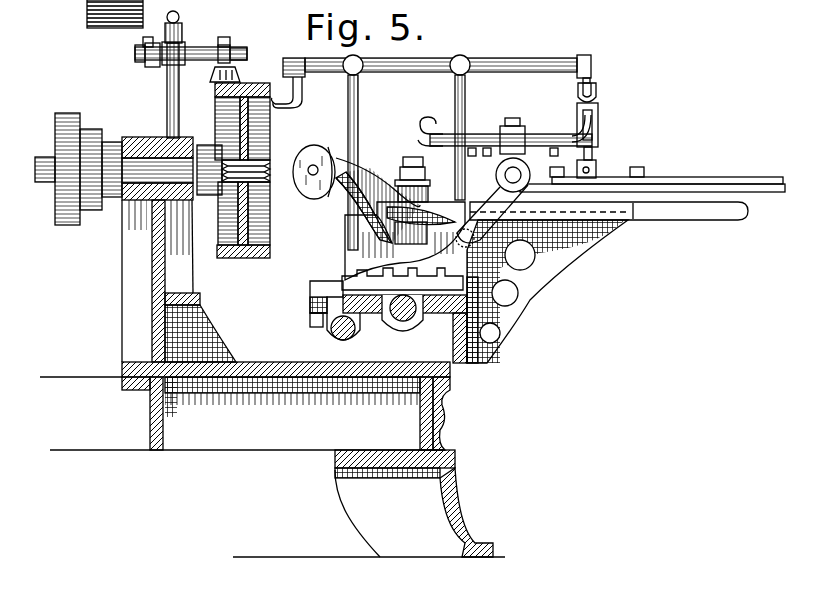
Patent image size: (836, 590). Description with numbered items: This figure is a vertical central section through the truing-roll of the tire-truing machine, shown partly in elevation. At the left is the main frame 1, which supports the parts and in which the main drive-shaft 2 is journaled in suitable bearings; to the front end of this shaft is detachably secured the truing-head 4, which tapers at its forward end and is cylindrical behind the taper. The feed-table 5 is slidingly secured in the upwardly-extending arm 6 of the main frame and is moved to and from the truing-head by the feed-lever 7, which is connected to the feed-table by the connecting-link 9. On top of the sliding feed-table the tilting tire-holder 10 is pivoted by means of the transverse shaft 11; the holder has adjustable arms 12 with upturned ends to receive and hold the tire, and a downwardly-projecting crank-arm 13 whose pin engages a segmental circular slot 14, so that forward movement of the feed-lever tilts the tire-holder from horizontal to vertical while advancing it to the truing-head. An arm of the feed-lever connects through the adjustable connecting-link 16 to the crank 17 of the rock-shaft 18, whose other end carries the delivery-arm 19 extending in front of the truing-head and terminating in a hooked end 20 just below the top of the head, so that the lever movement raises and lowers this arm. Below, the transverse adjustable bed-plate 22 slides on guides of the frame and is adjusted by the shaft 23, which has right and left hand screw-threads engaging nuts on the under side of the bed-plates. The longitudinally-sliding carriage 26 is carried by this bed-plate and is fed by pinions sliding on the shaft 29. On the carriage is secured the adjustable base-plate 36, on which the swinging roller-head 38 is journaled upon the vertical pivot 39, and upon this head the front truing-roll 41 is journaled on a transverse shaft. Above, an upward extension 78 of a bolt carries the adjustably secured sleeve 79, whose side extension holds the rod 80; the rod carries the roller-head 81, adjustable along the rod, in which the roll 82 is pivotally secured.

The main frame 1 is at (130, 250).
The main drive-shaft 2 is at (48, 185).
The truing-head 4 is at (218, 100).
The feed-table 5 is at (698, 212).
The upwardly-extending arm 6 is at (560, 248).
The feed-lever 7 is at (697, 183).
The connecting-link 9 is at (610, 176).
The tilting tire-holder 10 is at (484, 131).
The transverse shaft 11 is at (516, 177).
The adjustable arms 12 is at (598, 129).
The crank-arm 13 is at (508, 245).
The segmental circular slot 14 is at (493, 285).
The adjustable connecting-link 16 is at (600, 104).
The crank 17 is at (592, 76).
The rock-shaft 18 is at (499, 66).
The delivery-arm 19 is at (300, 86).
The hooked end 20 is at (280, 109).
The transverse adjustable bed-plate 22 is at (320, 290).
The shaft 23 is at (331, 329).
The longitudinally-sliding carriage 26 is at (408, 263).
The shaft 29 is at (402, 322).
The adjustable base-plates 36 is at (375, 256).
The swinging roller-head 38 is at (340, 190).
The vertical pivot 39 is at (421, 179).
The front truing-roll 41 is at (300, 178).
The upward extension of the bolt 78 is at (182, 37).
The sleeve 79 is at (163, 62).
The rod 80 is at (247, 54).
The roller-head 81 is at (231, 43).
The roll 82 is at (212, 74).